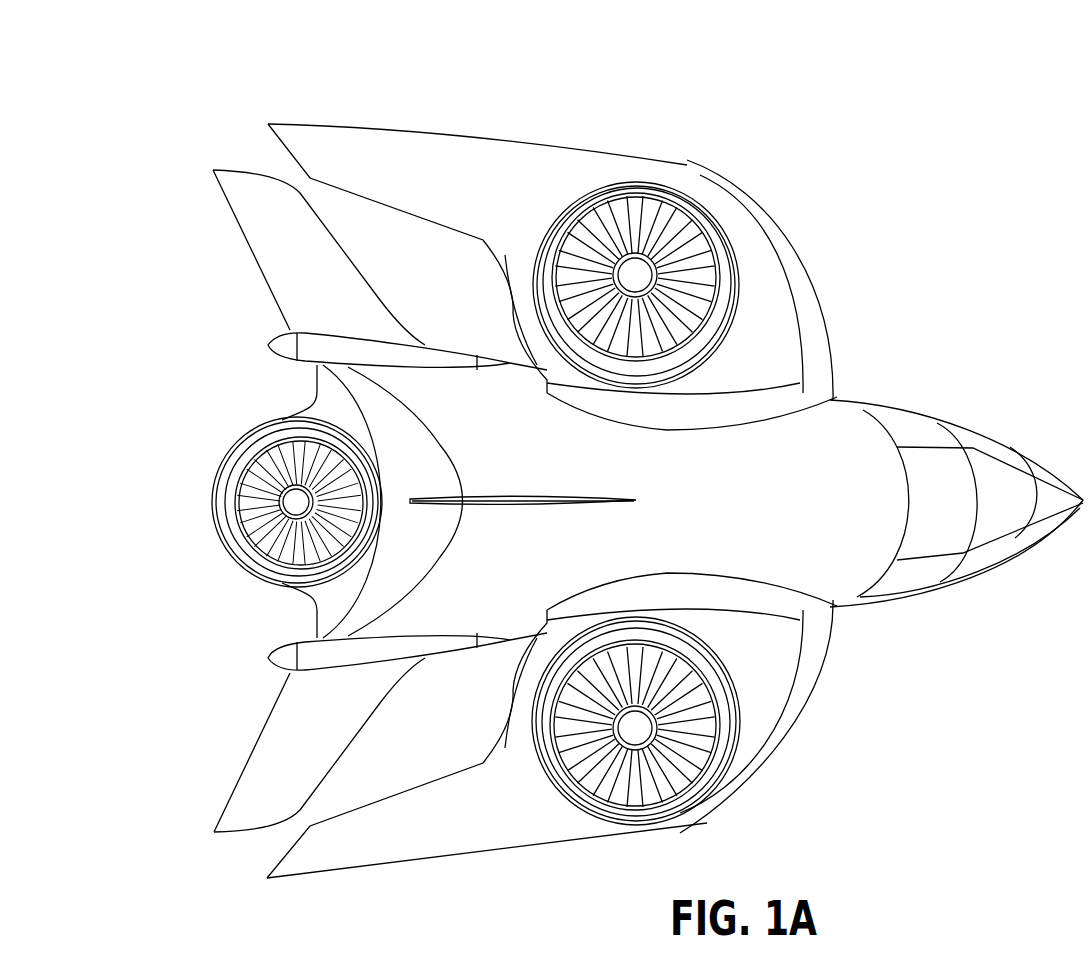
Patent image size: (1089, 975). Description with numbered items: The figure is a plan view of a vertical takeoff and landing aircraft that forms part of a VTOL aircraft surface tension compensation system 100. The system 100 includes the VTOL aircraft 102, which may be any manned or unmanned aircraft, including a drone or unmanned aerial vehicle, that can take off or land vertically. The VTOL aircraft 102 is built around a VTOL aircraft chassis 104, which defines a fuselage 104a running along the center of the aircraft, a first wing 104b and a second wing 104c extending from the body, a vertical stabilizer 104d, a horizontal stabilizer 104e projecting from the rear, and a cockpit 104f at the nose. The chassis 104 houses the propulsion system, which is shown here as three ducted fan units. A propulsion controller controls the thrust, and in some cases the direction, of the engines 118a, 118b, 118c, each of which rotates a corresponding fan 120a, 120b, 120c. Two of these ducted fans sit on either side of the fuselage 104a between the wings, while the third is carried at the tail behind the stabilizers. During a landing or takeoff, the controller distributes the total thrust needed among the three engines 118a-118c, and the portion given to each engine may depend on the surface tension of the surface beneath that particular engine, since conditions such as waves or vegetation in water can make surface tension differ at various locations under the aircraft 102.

The VTOL aircraft surface tension compensation system 100 is at (191, 34).
The VTOL aircraft 102 is at (243, 152).
The VTOL aircraft chassis 104 is at (383, 124).
The fuselage 104a is at (827, 590).
The first wing 104b is at (518, 162).
The second wing 104c is at (480, 850).
The vertical stabilizer 104d is at (247, 247).
The horizontal stabilizer 104e is at (543, 507).
The cockpit 104f is at (1007, 437).
The engine 118a is at (713, 780).
The engine 118b is at (235, 443).
The engine 118c is at (635, 183).
The fan 120a is at (638, 795).
The fan 120b is at (250, 522).
The fan 120c is at (683, 233).